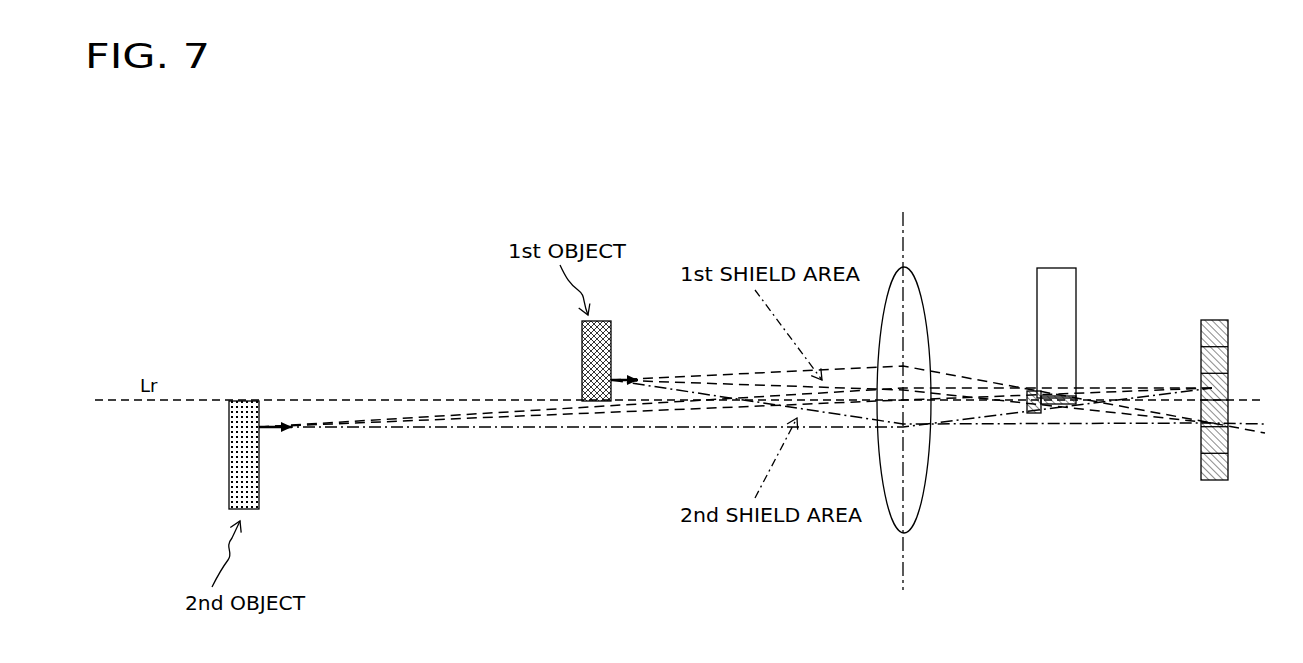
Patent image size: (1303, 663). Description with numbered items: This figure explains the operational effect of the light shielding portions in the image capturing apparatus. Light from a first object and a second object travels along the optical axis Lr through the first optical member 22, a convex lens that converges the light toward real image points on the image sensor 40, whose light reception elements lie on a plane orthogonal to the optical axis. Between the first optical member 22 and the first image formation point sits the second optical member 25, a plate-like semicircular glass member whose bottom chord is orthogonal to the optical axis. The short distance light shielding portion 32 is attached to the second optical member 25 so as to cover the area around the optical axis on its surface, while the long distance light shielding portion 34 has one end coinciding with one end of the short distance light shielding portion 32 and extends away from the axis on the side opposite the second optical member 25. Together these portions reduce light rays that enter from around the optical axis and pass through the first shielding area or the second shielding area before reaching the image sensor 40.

The first optical member 22 is at (921, 257).
The second optical member 25 is at (1061, 257).
The short distance light shielding portion 32 is at (1036, 392).
The long distance light shielding portion 34 is at (1032, 414).
The image sensor 40 is at (1218, 306).